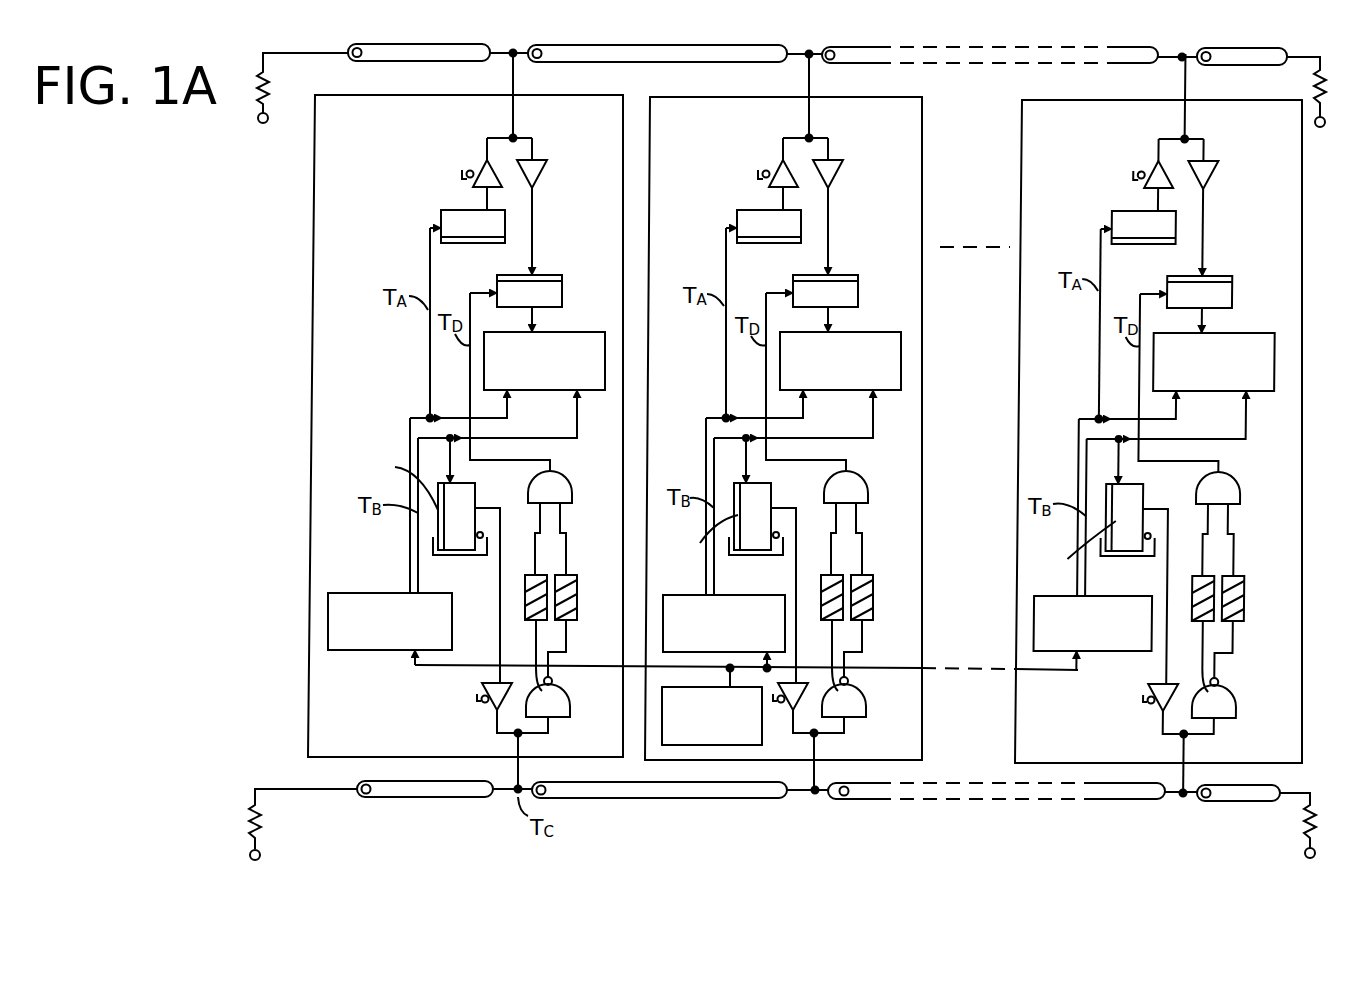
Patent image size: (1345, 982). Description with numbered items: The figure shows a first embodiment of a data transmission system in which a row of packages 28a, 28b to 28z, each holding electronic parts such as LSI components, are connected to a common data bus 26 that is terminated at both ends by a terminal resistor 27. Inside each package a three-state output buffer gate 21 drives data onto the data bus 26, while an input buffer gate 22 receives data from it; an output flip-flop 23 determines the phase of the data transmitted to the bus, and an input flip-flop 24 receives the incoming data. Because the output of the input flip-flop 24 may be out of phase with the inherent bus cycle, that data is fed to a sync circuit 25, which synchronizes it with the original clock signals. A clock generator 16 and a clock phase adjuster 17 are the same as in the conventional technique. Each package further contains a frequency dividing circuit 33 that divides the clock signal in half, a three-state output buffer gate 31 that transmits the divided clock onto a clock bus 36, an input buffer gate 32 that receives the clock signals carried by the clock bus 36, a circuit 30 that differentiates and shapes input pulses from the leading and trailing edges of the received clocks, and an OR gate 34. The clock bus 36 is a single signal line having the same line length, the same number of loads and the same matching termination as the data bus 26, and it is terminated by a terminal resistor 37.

The clock generator 16 is at (713, 727).
The clock phase adjuster 17 is at (366, 610).
The 3-state output buffer gate 21 is at (472, 166).
The input buffer gate 22 is at (546, 168).
The output flip-flop 23 is at (455, 210).
The input flip-flop 24 is at (584, 273).
The sync circuit 25 is at (580, 332).
The data bus 26 is at (704, 62).
The terminal resistor 27 is at (268, 84).
The package 28a is at (314, 432).
The package 28b is at (922, 392).
The package 28z is at (1021, 355).
The circuit to differentiate and shape input pulses 30 is at (557, 622).
The 3-state output buffer gate 31 is at (484, 703).
The input buffer gate 32 is at (569, 718).
The frequency dividing circuit 33 is at (476, 496).
The OR gate 34 is at (572, 483).
The clock bus 36 is at (600, 798).
The terminal resistor 37 is at (260, 815).